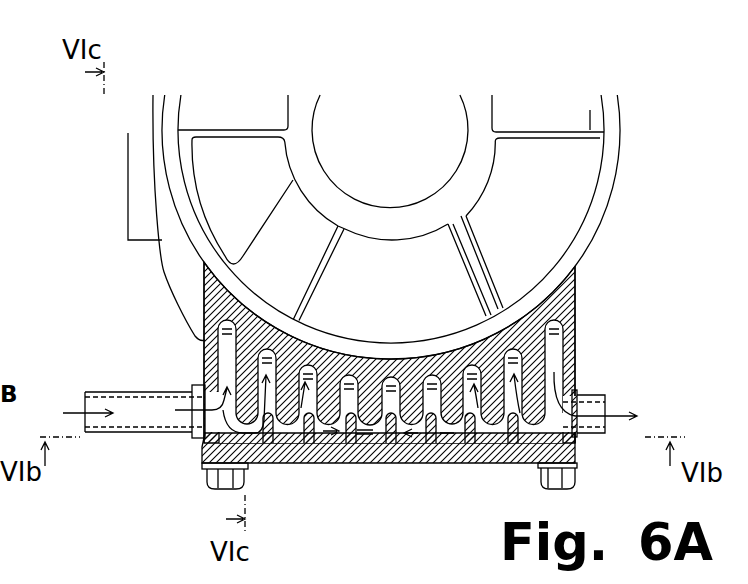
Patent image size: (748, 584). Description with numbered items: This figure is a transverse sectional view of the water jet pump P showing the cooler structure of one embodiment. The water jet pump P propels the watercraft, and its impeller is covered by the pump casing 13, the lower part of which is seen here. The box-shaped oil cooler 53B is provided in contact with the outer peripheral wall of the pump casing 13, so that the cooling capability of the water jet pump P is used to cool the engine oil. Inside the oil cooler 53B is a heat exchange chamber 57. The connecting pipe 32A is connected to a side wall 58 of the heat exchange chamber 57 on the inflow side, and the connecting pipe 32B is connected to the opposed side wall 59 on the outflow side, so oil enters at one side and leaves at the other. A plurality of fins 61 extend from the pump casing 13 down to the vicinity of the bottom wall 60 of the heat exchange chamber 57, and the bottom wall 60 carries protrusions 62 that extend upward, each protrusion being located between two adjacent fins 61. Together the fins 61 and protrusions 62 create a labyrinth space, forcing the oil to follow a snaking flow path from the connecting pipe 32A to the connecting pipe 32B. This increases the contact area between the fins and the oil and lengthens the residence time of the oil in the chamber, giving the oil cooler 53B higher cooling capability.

The water jet pump P is at (357, 227).
The pump casing 13 is at (607, 220).
The side wall 58 is at (203, 352).
The side wall 59 is at (577, 362).
The oil cooler 53B is at (429, 412).
The connecting pipe 32A is at (133, 435).
The connecting pipe 32B is at (598, 440).
The fins 61 is at (243, 430).
The protrusions 62 is at (280, 443).
The heat exchange chamber 57 is at (433, 393).
The bottom wall 60 is at (473, 464).